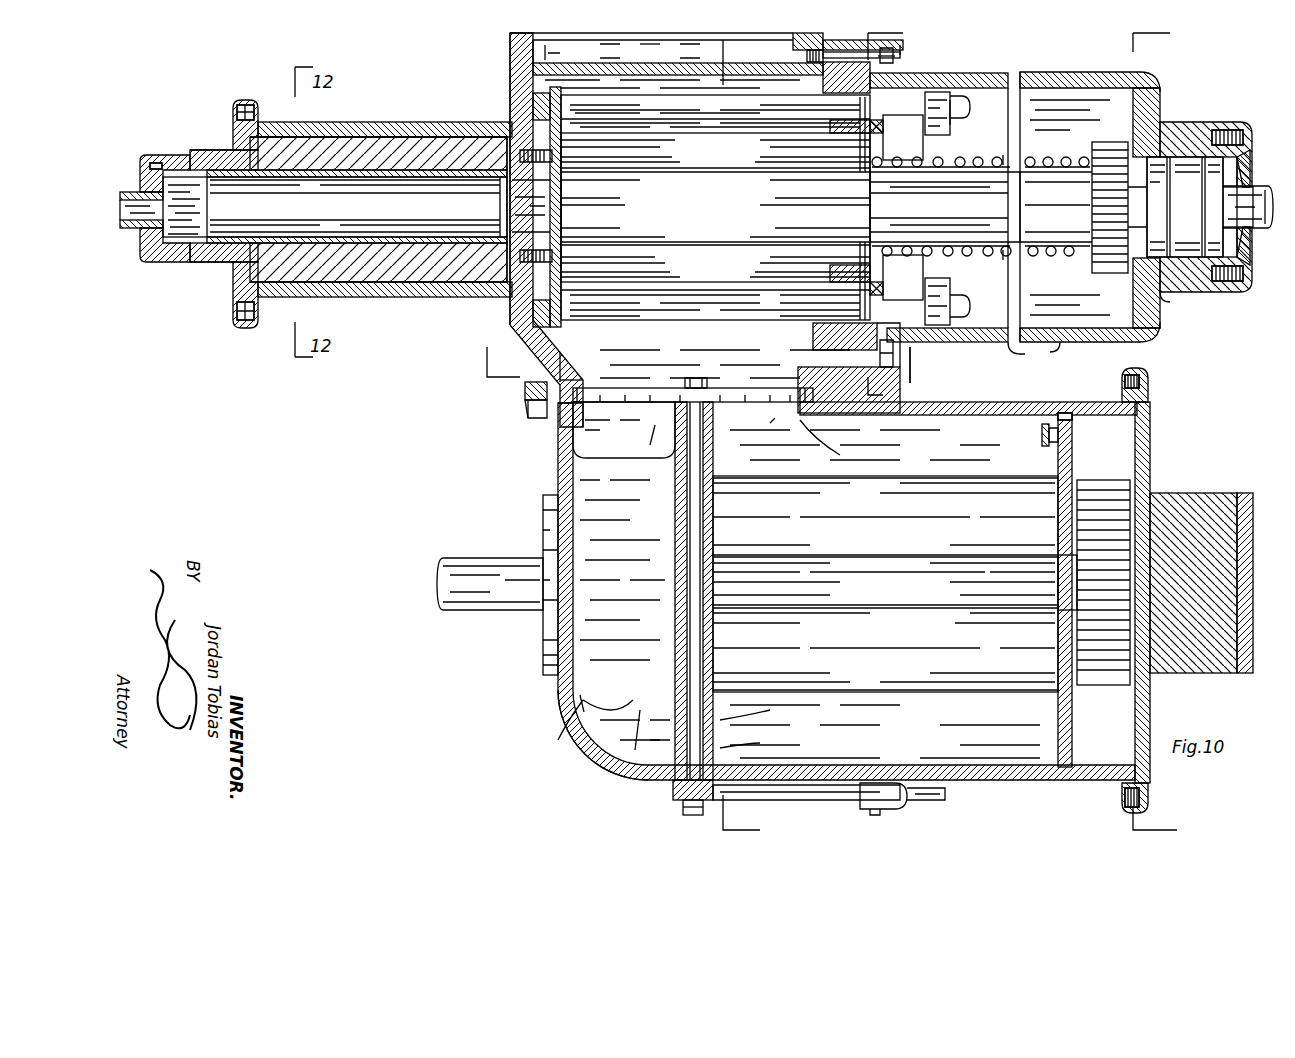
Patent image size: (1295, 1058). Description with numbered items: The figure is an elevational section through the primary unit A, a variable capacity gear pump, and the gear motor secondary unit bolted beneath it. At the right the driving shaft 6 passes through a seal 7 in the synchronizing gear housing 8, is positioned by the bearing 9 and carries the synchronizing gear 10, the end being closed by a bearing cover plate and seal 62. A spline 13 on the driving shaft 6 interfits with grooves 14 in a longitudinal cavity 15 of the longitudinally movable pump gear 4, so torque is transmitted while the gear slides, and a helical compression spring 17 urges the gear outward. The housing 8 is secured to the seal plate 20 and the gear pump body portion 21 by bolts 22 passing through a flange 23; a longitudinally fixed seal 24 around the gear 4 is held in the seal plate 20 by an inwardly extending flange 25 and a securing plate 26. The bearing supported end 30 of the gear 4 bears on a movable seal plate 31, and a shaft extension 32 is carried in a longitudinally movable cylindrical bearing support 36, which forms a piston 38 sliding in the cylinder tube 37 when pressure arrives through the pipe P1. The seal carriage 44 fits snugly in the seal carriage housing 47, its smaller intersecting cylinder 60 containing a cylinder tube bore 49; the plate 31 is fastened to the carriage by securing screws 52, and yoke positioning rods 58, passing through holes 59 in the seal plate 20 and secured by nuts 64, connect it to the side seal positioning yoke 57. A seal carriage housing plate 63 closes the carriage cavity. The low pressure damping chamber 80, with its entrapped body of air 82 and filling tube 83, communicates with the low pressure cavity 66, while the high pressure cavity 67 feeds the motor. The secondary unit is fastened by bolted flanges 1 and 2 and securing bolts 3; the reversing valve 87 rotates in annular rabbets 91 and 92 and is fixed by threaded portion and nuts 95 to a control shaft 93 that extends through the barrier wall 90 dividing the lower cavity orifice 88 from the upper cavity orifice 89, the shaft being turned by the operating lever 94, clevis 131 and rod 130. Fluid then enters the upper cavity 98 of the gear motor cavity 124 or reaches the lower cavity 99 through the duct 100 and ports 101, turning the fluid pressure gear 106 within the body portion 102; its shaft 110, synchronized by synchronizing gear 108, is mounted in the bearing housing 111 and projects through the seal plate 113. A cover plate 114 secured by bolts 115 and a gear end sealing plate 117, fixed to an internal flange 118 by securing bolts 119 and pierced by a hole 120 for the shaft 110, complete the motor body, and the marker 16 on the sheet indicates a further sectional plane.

The bolted flange 1 is at (525, 390).
The bolted flange 2 is at (528, 408).
The securing bolts 3 is at (503, 362).
The longitudinally movable pump gear 4 is at (715, 150).
The driving shaft 6 is at (1256, 207).
The seal 7 is at (1225, 195).
The synchronizing gear housing 8 is at (1100, 73).
The bearing 9 is at (1165, 160).
The synchronizing gear 10 is at (1092, 150).
The spline 13 is at (978, 152).
The grooves 14 is at (573, 210).
The longitudinal cavity 15 is at (875, 214).
The section line 16 is at (1152, 434).
The helical compression spring 17 is at (1058, 143).
The seal plate 20 is at (900, 56).
The gear pump body portion 21 is at (510, 52).
The bolts 22 is at (900, 44).
The flange 23 is at (905, 50).
The longitudinally fixed seal 24 is at (905, 125).
The inwardly extending flange 25 is at (835, 125).
The securing plate 26 is at (885, 295).
The bearing supported end 30 is at (550, 185).
The movable seal plate 31 is at (565, 122).
The shaft extension 32 is at (480, 140).
The longitudinally movable cylindrical bearing support 36 is at (330, 145).
The cylinder tube 37 is at (360, 150).
The piston 38 is at (372, 180).
The seal carriage 44 is at (257, 130).
The seal carriage housing 47 is at (290, 132).
The cylinder tube bore 49 is at (410, 255).
The securing screws 52 is at (510, 140).
The side seal positioning yoke 57 is at (948, 280).
The yoke positioning rods 58 is at (688, 104).
The holes 59 is at (860, 128).
The smaller intersecting cylinder 60 is at (420, 135).
The bearing cover plate and seal 62 is at (1250, 135).
The seal carriage housing plate 63 is at (230, 280).
The nuts 64 is at (533, 105).
The low pressure cavity 66 is at (510, 74).
The high pressure cavity 67 is at (695, 350).
The low pressure damping chamber 80 is at (601, 49).
The body of air 82 is at (641, 49).
The filling tube 83 is at (700, 40).
The reversing valve 87 is at (605, 440).
The semi-circular lower cavity orifice 88 is at (663, 422).
The semi-circular upper cavity orifice 89 is at (805, 434).
The barrier wall 90 is at (713, 462).
The annular rabbet 91 is at (560, 410).
The annular rabbet 92 is at (550, 432).
The control shaft 93 is at (713, 468).
The operating lever 94 is at (775, 800).
The threaded portion and nuts 95 is at (710, 382).
The upper cavity 98 is at (945, 448).
The lower cavity 99 is at (942, 745).
The duct 100 is at (600, 755).
The ports 101 is at (715, 742).
The secondary unit body portion 102 is at (615, 772).
The fluid pressure gear 106 is at (960, 690).
The synchronizing gear 108 is at (1100, 690).
The shaft 110 is at (505, 600).
The bearing housing 111 is at (660, 637).
The seal plate 113 is at (543, 630).
The cover plate 114 is at (1150, 408).
The bolts 115 is at (1148, 380).
The gear end sealing plate 117 is at (1072, 462).
The internal flange 118 is at (1068, 445).
The securing bolts 119 is at (1042, 438).
The holes 120 is at (1062, 612).
The gear motor cavity 124 is at (862, 735).
The rod 130 is at (935, 802).
The clevis 131 is at (885, 810).
The primary unit A is at (1165, 325).
The pipe P1 is at (128, 240).